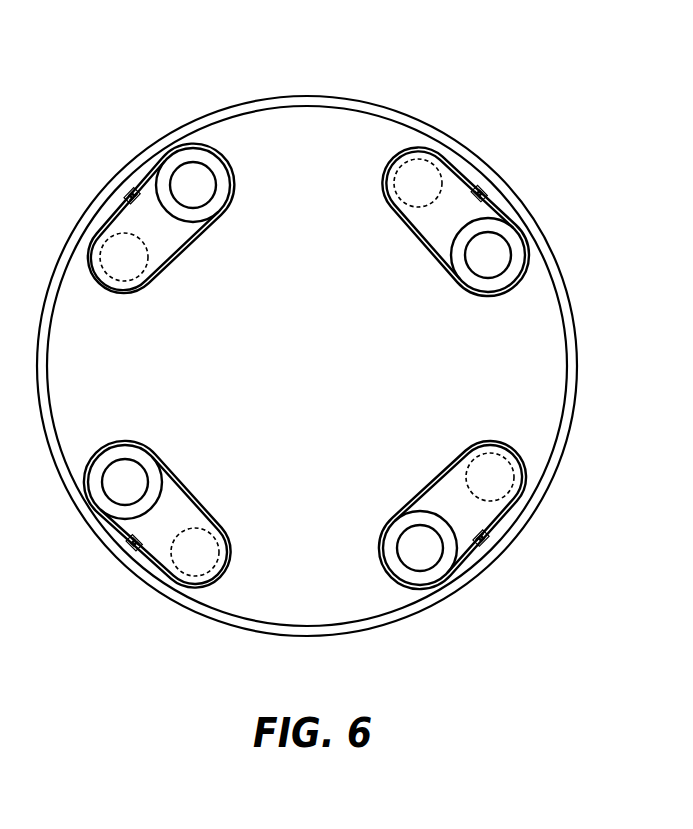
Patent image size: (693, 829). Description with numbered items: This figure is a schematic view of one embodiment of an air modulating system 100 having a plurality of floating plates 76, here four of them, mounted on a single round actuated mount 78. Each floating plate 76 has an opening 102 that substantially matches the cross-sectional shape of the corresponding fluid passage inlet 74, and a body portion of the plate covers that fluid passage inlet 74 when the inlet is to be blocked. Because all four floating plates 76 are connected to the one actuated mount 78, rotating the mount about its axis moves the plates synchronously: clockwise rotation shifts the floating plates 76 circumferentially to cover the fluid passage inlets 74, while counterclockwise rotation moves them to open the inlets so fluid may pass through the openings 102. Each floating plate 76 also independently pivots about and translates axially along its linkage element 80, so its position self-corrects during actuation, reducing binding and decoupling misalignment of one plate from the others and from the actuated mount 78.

The air modulating system 100 is at (514, 86).
The actuated mount 78 is at (560, 299).
The floating plate 76 is at (141, 232).
The fluid passage inlet 74 is at (113, 266).
The opening 102 is at (177, 194).
The linkage element 80 is at (510, 210).